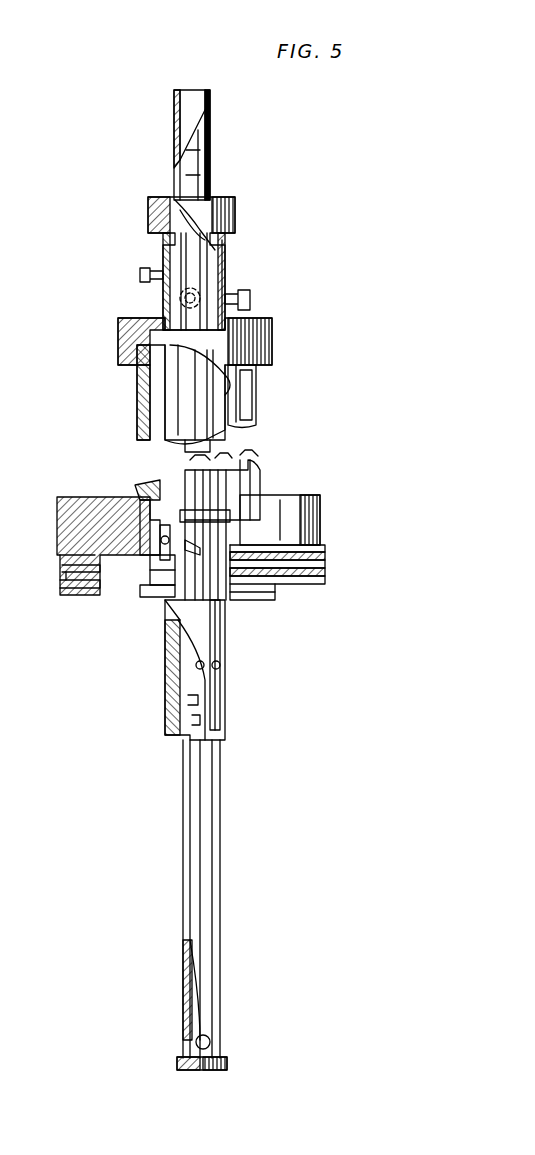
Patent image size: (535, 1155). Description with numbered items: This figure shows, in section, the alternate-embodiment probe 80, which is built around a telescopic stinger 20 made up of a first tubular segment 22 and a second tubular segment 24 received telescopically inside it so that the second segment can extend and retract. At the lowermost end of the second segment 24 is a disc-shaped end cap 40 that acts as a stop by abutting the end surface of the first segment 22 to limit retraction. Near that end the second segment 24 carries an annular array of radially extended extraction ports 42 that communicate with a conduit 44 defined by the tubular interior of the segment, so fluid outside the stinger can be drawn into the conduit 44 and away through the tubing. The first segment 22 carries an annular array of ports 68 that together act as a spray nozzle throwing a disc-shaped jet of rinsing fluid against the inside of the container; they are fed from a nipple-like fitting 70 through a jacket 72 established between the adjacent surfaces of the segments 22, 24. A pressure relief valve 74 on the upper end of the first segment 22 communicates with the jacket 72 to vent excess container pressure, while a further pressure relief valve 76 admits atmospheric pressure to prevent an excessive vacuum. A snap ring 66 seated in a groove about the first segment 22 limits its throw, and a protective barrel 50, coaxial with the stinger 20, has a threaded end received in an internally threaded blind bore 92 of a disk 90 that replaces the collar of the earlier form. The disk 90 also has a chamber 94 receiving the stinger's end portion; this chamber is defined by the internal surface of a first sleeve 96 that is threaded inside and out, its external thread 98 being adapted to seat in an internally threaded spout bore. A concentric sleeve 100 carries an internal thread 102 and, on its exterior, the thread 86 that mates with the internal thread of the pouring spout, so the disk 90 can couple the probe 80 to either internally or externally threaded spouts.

The telescopic stinger 20 is at (155, 666).
The first tubular segment 22 is at (220, 702).
The second tubular segment 24 is at (203, 802).
The end cap 40 is at (228, 1061).
The extraction ports 42 is at (210, 1040).
The conduit 44 is at (198, 1020).
The protective barrel 50 is at (256, 403).
The snap ring 66 is at (200, 513).
The ports 68 is at (228, 667).
The fitting 70 is at (139, 269).
The jacket 72 is at (226, 392).
The pressure relief valve 74 is at (250, 299).
The further pressure relief valve 76 is at (224, 277).
The probe 80 is at (290, 243).
The thread 86 is at (295, 570).
The disk 90 is at (100, 497).
The blind bore 92 is at (146, 490).
The chamber 94 is at (163, 570).
The first sleeve 96 is at (136, 596).
The external thread 98 is at (132, 590).
The sleeve 100 is at (327, 566).
The internal thread 102 is at (92, 588).